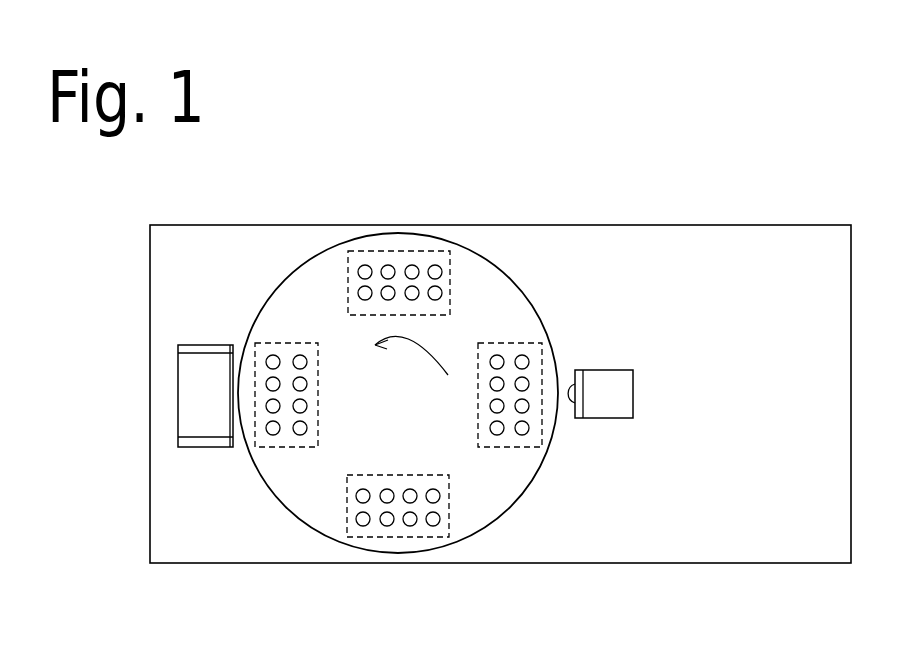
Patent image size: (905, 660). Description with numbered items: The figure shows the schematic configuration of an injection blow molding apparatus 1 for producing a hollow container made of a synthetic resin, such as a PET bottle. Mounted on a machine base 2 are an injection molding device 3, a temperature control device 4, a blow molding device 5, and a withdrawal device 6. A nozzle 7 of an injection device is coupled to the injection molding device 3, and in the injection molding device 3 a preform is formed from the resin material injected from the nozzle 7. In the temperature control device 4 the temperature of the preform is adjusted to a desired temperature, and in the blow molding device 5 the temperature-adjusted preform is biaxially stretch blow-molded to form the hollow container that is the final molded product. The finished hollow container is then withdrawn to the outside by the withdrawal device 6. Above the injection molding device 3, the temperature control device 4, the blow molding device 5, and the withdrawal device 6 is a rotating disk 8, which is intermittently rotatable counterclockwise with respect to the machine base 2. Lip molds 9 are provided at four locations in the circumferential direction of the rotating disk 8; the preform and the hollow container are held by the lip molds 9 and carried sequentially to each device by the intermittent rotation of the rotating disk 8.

The injection blow molding apparatus 1 is at (660, 202).
The machine base 2 is at (578, 528).
The injection molding device 3 is at (425, 364).
The temperature control device 4 is at (422, 247).
The blow molding device 5 is at (242, 328).
The withdrawal device 6 is at (423, 538).
The nozzle 7 is at (600, 420).
The rotating disk 8 is at (502, 270).
The lip molds 9 is at (382, 264).